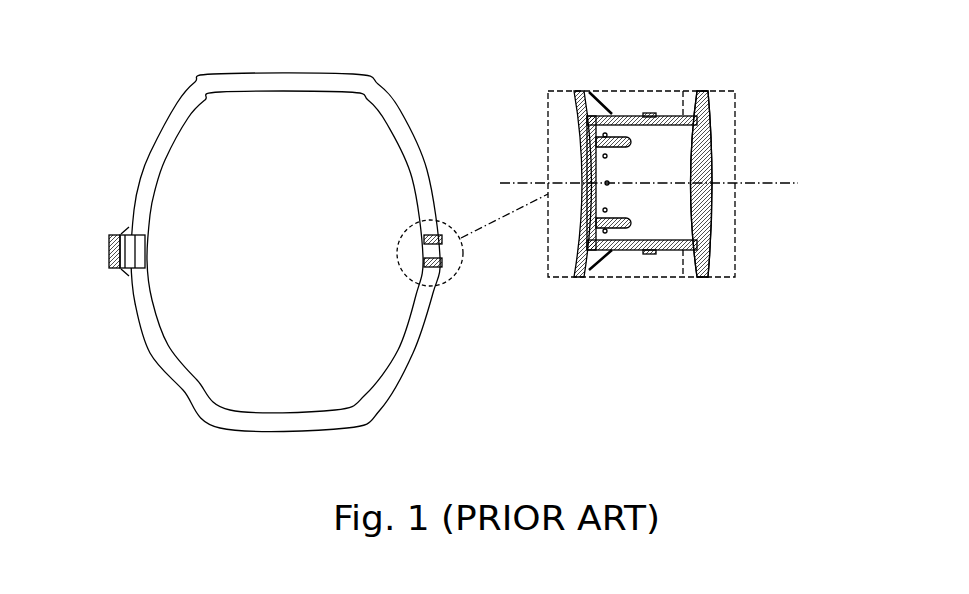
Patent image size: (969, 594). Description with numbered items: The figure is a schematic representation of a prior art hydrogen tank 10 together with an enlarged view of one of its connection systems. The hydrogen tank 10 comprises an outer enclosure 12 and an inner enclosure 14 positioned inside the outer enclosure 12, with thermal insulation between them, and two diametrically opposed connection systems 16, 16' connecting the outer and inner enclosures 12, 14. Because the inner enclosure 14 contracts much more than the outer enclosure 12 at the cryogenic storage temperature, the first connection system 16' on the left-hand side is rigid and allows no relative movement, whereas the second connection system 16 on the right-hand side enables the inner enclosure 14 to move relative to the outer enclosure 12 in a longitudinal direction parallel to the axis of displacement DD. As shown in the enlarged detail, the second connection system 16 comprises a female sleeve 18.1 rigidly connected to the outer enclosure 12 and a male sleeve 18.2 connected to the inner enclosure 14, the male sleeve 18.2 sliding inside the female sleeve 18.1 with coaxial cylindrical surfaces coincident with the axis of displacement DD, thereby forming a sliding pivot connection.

The hydrogen tank 10 is at (242, 235).
The outer enclosure 12 is at (135, 178).
The inner enclosure 14 is at (175, 132).
The second connection system 16 is at (472, 276).
The first connection system 16' is at (83, 227).
The female sleeve 18.1 is at (655, 114).
The male sleeve 18.2 is at (622, 250).
The axis of displacement DD is at (770, 182).